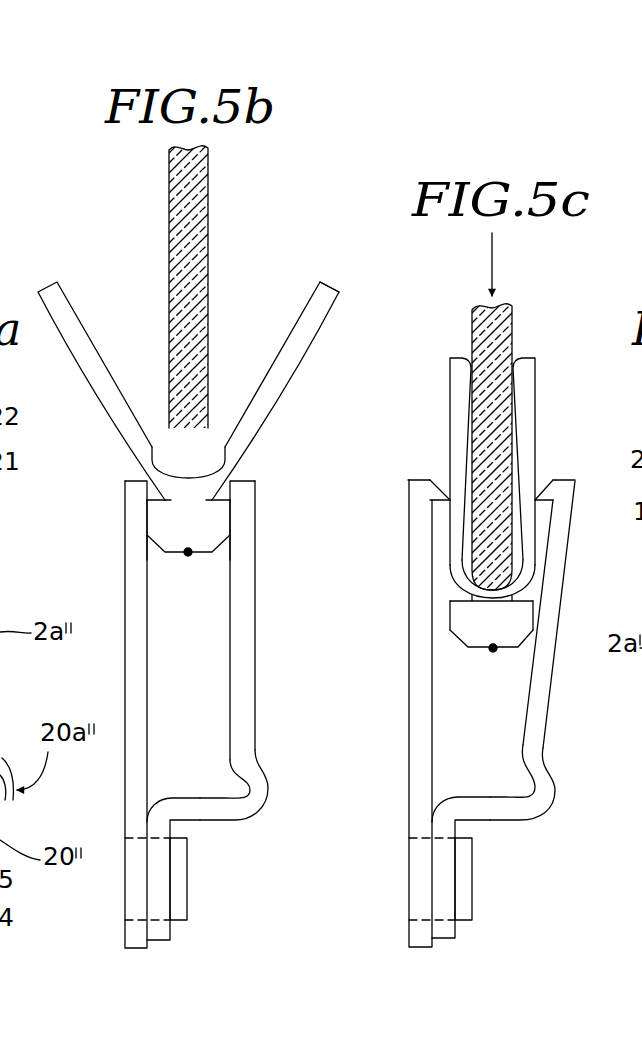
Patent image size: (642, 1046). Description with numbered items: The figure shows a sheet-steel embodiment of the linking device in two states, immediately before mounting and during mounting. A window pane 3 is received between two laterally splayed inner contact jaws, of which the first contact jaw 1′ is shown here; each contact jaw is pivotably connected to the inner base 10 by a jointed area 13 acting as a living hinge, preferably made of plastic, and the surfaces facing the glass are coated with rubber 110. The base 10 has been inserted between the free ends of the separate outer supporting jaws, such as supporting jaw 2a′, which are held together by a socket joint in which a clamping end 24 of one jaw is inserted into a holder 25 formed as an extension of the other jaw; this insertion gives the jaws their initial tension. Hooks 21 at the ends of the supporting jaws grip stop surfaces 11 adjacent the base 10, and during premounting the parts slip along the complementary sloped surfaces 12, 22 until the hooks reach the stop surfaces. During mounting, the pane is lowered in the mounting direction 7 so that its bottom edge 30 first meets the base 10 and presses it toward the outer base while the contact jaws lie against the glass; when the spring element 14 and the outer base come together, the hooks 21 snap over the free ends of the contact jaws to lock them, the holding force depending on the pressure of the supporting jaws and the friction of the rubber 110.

In FIG. 5B, the window pane 3 is at (176, 238).
In FIG. 5C, the window pane 3 is at (480, 336).
In FIG. 5C, the mounting direction 7 is at (490, 256).
In FIG. 5B, the base 10 is at (83, 321).
In FIG. 5C, the base 10 is at (507, 615).
In FIG. 5B, the rubber 110 is at (295, 321).
In FIG. 5B, the contact jaw 1′ is at (112, 398).
In FIG. 5C, the contact jaw 1′ is at (458, 389).
In FIG. 5B, the bottom edge 30 is at (168, 434).
In FIG. 5B, the jointed area 13 is at (133, 463).
In FIG. 5B, the hooks 21 is at (143, 490).
In FIG. 5C, the hooks 21 is at (421, 490).
In FIG. 5C, the sloped surface 22 is at (442, 481).
In FIG. 5C, the stop surfaces 11 is at (460, 597).
In FIG. 5B, the sloped surface 12 is at (149, 551).
In FIG. 5C, the sloped surface 12 is at (458, 645).
In FIG. 5B, the spring element 14 is at (195, 556).
In FIG. 5B, the supporting jaw 2a′ is at (135, 684).
In FIG. 5C, the supporting jaw 2a′ is at (422, 692).
In FIG. 5B, the holder 25 is at (177, 897).
In FIG. 5C, the holder 25 is at (462, 897).
In FIG. 5B, the clamping end 24 is at (160, 911).
In FIG. 5C, the clamping end 24 is at (443, 910).